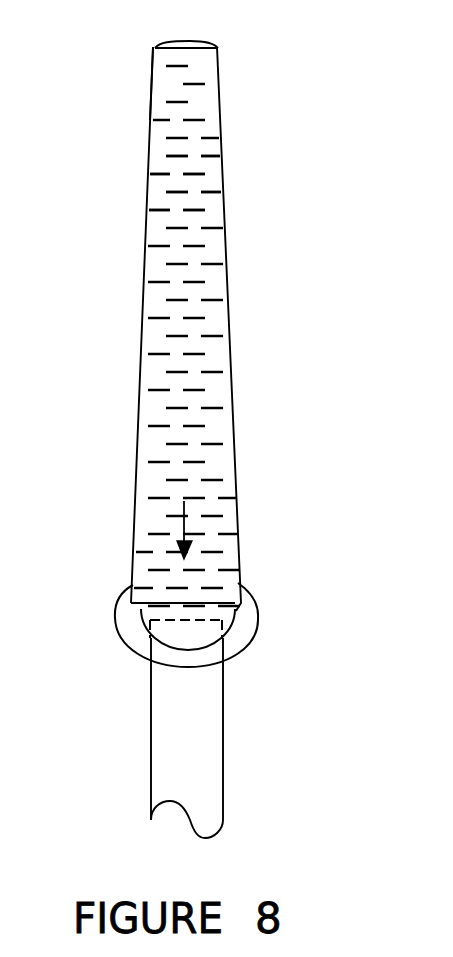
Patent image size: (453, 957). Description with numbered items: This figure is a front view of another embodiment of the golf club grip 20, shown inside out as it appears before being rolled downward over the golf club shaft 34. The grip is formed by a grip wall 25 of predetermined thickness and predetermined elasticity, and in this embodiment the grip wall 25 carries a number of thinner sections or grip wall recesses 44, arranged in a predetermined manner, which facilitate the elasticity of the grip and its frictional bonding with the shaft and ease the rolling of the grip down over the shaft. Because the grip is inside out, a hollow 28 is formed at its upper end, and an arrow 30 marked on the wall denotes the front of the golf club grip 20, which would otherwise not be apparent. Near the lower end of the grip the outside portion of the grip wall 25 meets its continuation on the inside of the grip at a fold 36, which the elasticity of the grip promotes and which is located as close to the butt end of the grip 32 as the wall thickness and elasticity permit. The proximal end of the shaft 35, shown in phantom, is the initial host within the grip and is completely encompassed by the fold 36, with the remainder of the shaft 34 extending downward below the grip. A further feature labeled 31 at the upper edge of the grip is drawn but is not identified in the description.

The golf club grip 20 is at (262, 325).
The grip wall 25 is at (215, 200).
The hollow 28 is at (163, 44).
The top corner edge of blade 31 is at (153, 48).
The grip wall recesses 44 is at (190, 210).
The arrow 30 is at (184, 523).
The butt end of the grip 32 is at (150, 603).
The proximal end of the shaft 35 is at (202, 615).
The fold 36 is at (180, 658).
The golf club shaft 34 is at (224, 677).